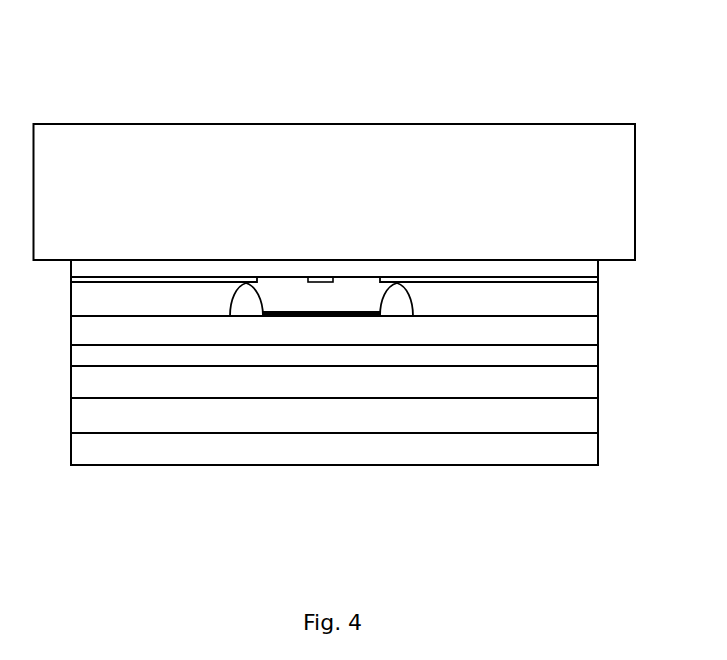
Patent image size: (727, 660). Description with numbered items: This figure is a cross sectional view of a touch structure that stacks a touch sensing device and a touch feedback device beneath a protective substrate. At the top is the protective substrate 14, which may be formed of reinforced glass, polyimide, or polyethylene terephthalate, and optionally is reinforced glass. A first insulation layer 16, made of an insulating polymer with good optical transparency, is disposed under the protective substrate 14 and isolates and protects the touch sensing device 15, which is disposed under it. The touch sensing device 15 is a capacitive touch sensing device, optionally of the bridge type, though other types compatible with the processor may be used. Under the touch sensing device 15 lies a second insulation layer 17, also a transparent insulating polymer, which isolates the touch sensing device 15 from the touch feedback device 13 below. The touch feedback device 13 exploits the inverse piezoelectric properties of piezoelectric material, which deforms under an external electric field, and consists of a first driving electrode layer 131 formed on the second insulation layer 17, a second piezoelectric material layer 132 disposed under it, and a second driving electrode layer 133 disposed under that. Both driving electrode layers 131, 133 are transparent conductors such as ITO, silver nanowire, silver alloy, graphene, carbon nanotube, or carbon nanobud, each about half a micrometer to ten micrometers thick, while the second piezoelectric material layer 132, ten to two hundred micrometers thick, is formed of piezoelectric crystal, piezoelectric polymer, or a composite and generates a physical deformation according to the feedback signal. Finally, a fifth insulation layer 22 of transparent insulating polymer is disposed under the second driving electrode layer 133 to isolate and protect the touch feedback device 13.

The touch feedback device 13 is at (360, 522).
The first driving electrode layer 131 is at (321, 354).
The second piezoelectric material layer 132 is at (247, 388).
The second driving electrode layer 133 is at (163, 418).
The protective substrate 14 is at (310, 163).
The touch sensing device 15 is at (129, 308).
The first insulation layer 16 is at (451, 270).
The second insulation layer 17 is at (522, 337).
The fifth insulation layer 22 is at (475, 448).